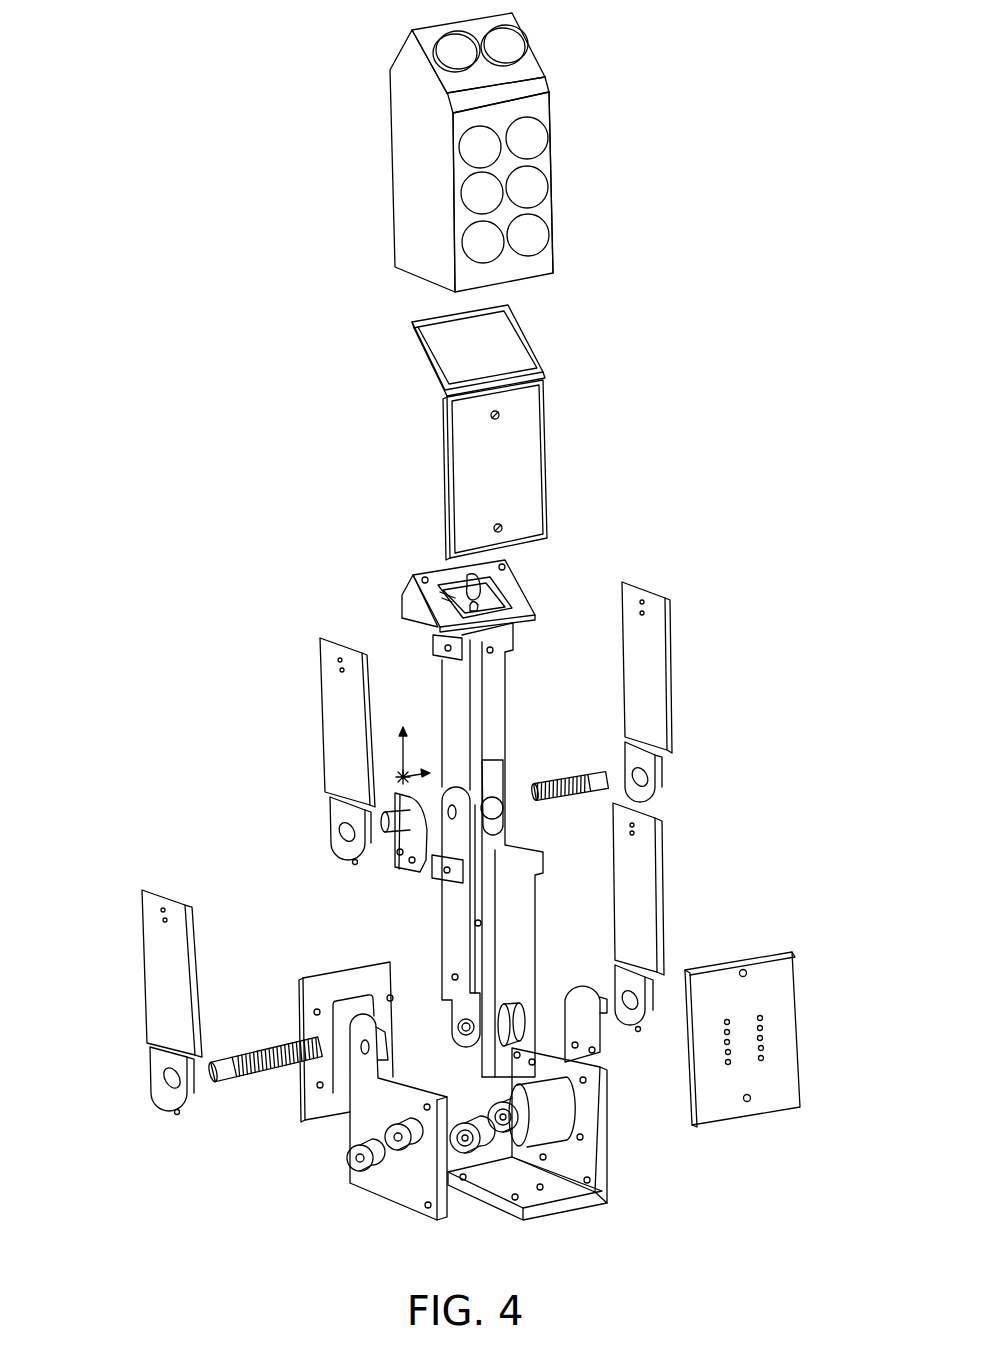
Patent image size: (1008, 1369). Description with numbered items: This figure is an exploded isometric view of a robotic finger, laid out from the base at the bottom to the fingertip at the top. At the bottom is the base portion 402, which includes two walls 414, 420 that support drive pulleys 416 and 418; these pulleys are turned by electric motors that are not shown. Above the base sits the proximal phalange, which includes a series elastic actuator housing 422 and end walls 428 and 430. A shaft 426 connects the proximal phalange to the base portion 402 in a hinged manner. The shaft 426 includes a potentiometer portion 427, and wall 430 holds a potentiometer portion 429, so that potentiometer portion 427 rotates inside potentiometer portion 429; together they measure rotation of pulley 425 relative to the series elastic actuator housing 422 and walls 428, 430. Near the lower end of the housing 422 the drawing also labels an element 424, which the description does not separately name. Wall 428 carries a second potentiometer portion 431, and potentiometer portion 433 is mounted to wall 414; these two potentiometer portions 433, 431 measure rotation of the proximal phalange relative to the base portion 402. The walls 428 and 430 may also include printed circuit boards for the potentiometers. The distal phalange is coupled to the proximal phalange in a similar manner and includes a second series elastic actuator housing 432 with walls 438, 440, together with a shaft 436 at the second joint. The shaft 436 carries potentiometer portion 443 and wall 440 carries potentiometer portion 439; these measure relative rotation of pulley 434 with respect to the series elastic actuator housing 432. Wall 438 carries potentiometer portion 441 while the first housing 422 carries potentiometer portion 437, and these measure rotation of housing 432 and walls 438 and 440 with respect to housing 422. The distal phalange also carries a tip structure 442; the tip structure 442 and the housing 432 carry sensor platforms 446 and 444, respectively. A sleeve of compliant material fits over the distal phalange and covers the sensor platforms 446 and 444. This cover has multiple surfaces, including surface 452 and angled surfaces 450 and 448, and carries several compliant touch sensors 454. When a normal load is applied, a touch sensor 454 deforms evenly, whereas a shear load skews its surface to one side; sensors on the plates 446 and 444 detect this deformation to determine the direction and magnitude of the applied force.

The base portion 402 is at (742, 1039).
The wall 414 is at (555, 1152).
The drive pulley 416 is at (575, 1110).
The drive pulley 418 is at (512, 1155).
The wall 420 is at (403, 1187).
The series elastic actuator housing 422 is at (440, 944).
The pivot hole 424 is at (493, 1033).
The pulley 425 is at (517, 1010).
The shaft 426 is at (268, 1052).
The potentiometer portion 427 is at (232, 1101).
The wall 428 is at (663, 850).
The potentiometer portion 429 is at (177, 1114).
The wall 430 is at (157, 1002).
The potentiometer portion 431 is at (658, 993).
The series elastic actuator housing 432 is at (499, 850).
The potentiometer portion 433 is at (600, 1033).
The pulley 434 is at (492, 802).
The shaft 436 is at (565, 828).
The potentiometer portion 437 is at (395, 797).
The wall 438 is at (333, 718).
The potentiometer portion 439 is at (660, 777).
The wall 440 is at (658, 658).
The potentiometer portion 441 is at (343, 848).
The tip structure 442 is at (447, 580).
The potentiometer portion 443 is at (603, 780).
The sensor platform 444 is at (532, 473).
The sensor platform 446 is at (513, 342).
The angled surface 448 is at (470, 152).
The angled surface 450 is at (530, 70).
The surface 452 is at (540, 268).
The compliant touch sensor 454 is at (540, 192).